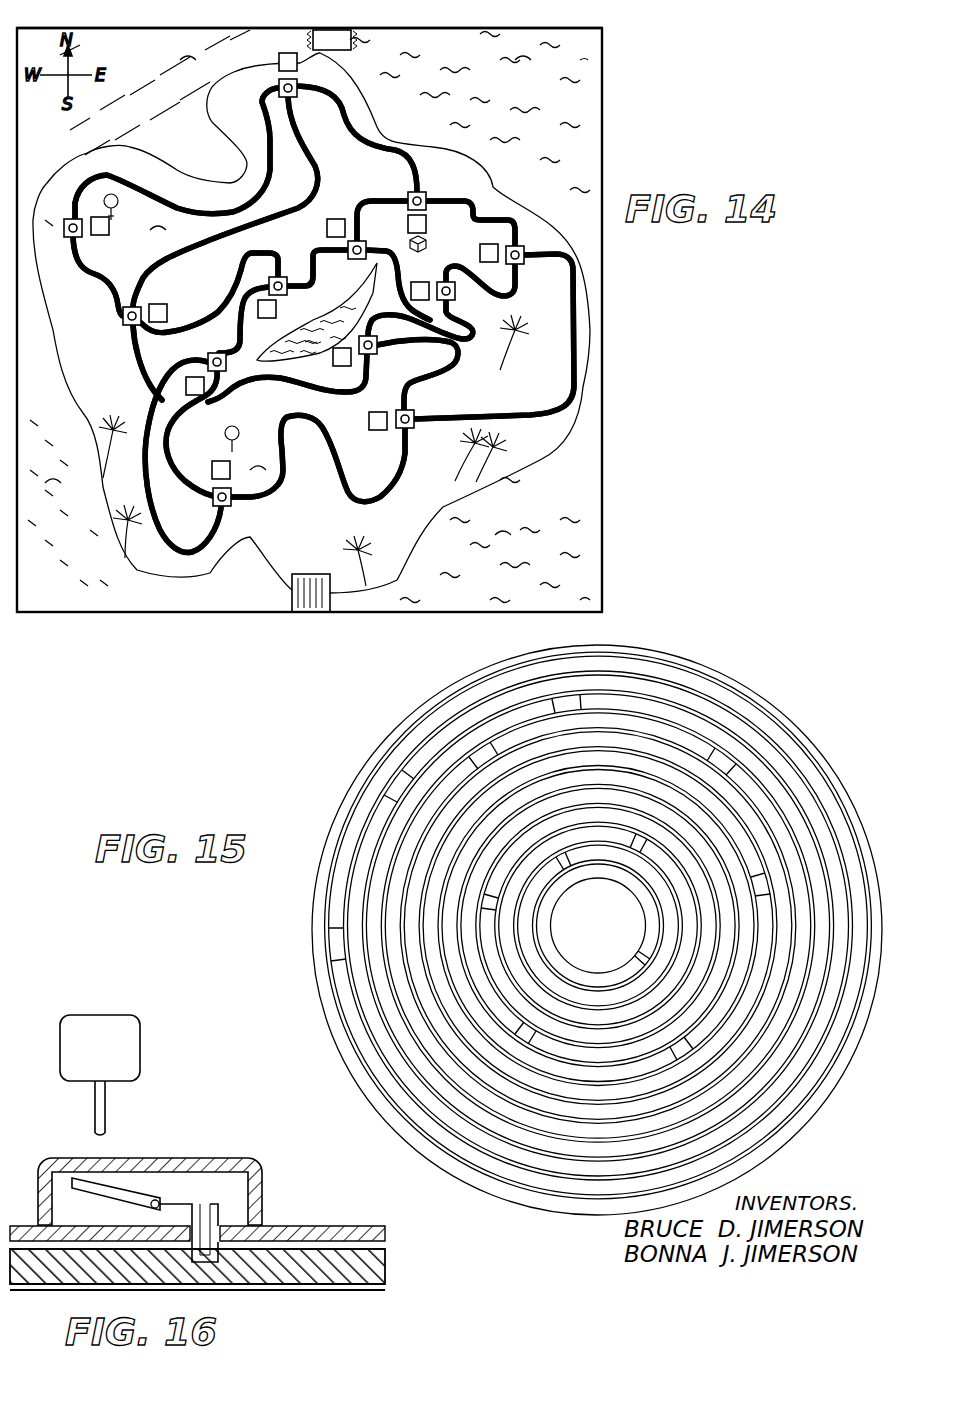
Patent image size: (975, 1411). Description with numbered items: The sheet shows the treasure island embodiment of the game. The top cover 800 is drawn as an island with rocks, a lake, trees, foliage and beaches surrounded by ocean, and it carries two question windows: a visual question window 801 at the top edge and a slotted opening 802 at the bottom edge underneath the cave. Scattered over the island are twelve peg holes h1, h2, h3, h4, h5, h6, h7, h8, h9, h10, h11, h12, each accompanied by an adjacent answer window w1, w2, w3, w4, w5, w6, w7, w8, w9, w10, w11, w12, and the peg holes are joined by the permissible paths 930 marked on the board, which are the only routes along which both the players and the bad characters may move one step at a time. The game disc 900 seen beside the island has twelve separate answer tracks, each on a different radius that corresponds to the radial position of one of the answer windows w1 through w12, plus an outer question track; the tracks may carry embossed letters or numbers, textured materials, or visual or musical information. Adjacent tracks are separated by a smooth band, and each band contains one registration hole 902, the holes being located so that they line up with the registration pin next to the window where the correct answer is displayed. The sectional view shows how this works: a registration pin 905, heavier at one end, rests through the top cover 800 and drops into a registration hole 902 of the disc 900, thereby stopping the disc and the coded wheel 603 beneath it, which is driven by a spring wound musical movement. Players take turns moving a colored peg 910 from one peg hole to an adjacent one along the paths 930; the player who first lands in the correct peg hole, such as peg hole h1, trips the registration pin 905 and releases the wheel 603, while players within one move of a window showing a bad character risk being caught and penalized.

In FIG. 14, the top cover 800 is at (602, 546).
In FIG. 16, the top cover 800 is at (340, 1226).
In FIG. 14, the visual question window 801 is at (340, 44).
In FIG. 14, the slotted opening 802 is at (318, 614).
In FIG. 15, the game disc 900 is at (797, 718).
In FIG. 16, the game disc 900 is at (388, 1268).
In FIG. 15, the registration hole 902 is at (412, 735).
In FIG. 14, the permissible paths 930 is at (333, 128).
In FIG. 16, the registration pin 905 is at (248, 1192).
In FIG. 16, the colored peg 910 is at (140, 1048).
In FIG. 16, the coded wheel 603 is at (370, 1291).
In FIG. 14, the peg hole h1 is at (70, 232).
In FIG. 16, the peg hole h1 is at (105, 1158).
In FIG. 14, the peg hole h2 is at (292, 86).
In FIG. 14, the peg hole h3 is at (519, 252).
In FIG. 14, the peg hole h4 is at (226, 502).
In FIG. 14, the peg hole h5 is at (128, 320).
In FIG. 14, the peg hole h6 is at (421, 198).
In FIG. 14, the peg hole h7 is at (409, 416).
In FIG. 14, the peg hole h8 is at (450, 296).
In FIG. 14, the peg hole h9 is at (221, 358).
In FIG. 14, the peg hole h10 is at (354, 255).
In FIG. 14, the peg hole h11 is at (372, 342).
In FIG. 14, the peg hole h12 is at (282, 283).
In FIG. 14, the answer window w1 is at (100, 226).
In FIG. 15, the answer window w1 is at (337, 944).
In FIG. 14, the answer window w2 is at (288, 62).
In FIG. 15, the answer window w2 is at (399, 786).
In FIG. 14, the answer window w3 is at (489, 253).
In FIG. 15, the answer window w3 is at (500, 905).
In FIG. 14, the answer window w4 is at (221, 470).
In FIG. 15, the answer window w4 is at (483, 755).
In FIG. 14, the answer window w5 is at (158, 313).
In FIG. 15, the answer window w5 is at (722, 762).
In FIG. 14, the answer window w6 is at (417, 224).
In FIG. 15, the answer window w6 is at (760, 885).
In FIG. 14, the answer window w7 is at (378, 421).
In FIG. 15, the answer window w7 is at (681, 1049).
In FIG. 14, the answer window w8 is at (420, 291).
In FIG. 15, the answer window w8 is at (526, 1033).
In FIG. 14, the answer window w9 is at (195, 386).
In FIG. 15, the answer window w9 is at (567, 704).
In FIG. 14, the answer window w10 is at (338, 228).
In FIG. 15, the answer window w10 is at (638, 843).
In FIG. 14, the answer window w11 is at (344, 357).
In FIG. 15, the answer window w11 is at (564, 861).
In FIG. 14, the answer window w12 is at (269, 309).
In FIG. 15, the answer window w12 is at (642, 958).